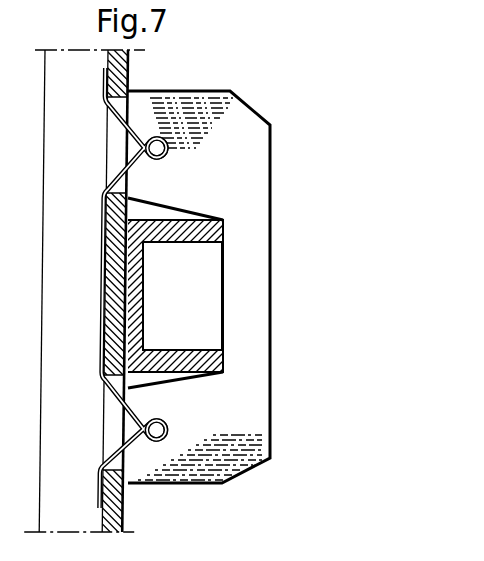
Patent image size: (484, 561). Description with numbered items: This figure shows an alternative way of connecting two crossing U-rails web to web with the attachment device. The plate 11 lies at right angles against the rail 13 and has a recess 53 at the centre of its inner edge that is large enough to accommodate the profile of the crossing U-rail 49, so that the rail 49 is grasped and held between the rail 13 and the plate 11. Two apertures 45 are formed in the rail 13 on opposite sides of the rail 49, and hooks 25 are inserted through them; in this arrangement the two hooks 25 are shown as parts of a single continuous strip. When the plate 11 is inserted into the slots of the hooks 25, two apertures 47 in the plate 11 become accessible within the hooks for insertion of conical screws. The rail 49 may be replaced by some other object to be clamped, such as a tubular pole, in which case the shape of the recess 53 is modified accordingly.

The plate 11 is at (250, 163).
The rail 13 is at (130, 66).
The hook 25 is at (126, 128).
The apertures 45 is at (111, 152).
The apertures 47 is at (168, 148).
The U-rail 49 is at (178, 242).
The recess 53 is at (153, 212).